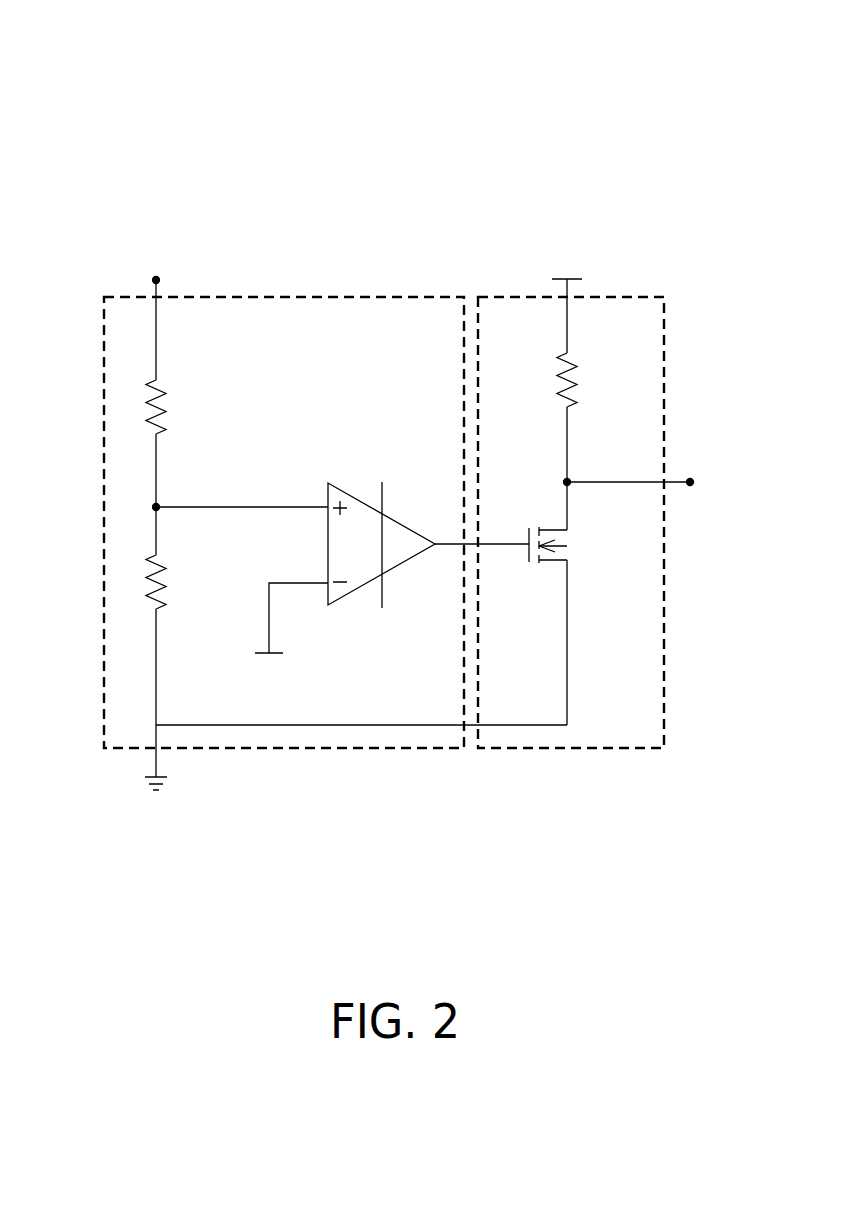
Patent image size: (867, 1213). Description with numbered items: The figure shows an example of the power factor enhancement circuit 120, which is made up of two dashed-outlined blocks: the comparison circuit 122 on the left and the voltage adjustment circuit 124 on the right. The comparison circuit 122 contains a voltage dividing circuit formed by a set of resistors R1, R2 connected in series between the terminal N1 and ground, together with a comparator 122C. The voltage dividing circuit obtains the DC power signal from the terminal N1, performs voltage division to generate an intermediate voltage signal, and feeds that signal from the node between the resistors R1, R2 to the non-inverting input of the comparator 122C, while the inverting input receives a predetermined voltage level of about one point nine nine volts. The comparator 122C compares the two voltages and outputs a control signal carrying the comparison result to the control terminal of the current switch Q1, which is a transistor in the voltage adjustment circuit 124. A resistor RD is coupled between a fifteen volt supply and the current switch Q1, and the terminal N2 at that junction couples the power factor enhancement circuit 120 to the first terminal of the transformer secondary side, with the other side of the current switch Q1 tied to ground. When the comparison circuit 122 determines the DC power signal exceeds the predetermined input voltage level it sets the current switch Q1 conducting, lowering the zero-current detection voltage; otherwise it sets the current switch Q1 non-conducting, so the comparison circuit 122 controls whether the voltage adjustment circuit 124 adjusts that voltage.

The power factor enhancement circuit 120 is at (619, 125).
The comparison circuit 122 is at (284, 297).
The comparator 122C is at (343, 490).
The voltage adjustment circuit 124 is at (631, 297).
The terminal N1 is at (158, 310).
The terminal N2 is at (652, 484).
The resistor R1 is at (177, 407).
The resistor R2 is at (177, 582).
The resistor RD is at (588, 383).
The current switch Q1 is at (571, 550).